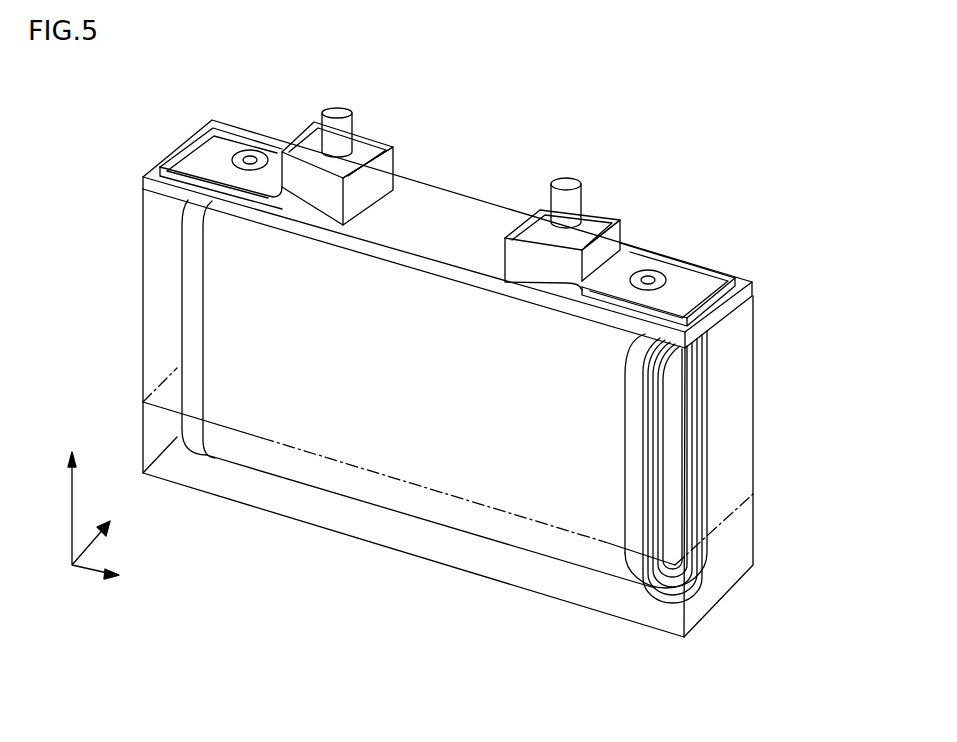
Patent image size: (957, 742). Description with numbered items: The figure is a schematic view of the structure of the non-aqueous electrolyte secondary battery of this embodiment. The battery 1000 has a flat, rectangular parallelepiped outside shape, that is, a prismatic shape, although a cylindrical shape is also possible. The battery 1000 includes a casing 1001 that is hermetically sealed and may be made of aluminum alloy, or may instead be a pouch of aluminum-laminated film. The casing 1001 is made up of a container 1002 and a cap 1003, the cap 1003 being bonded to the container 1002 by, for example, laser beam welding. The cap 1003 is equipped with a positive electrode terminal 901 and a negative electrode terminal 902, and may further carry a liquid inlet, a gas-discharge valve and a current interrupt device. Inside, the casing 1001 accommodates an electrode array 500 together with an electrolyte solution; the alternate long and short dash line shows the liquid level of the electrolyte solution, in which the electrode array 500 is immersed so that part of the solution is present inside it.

The battery 1000 is at (516, 98).
The casing 1001 is at (828, 243).
The container 1002 is at (755, 337).
The cap 1003 is at (755, 286).
The electrode array 500 is at (397, 408).
The positive electrode terminal 901 is at (569, 180).
The negative electrode terminal 902 is at (339, 109).